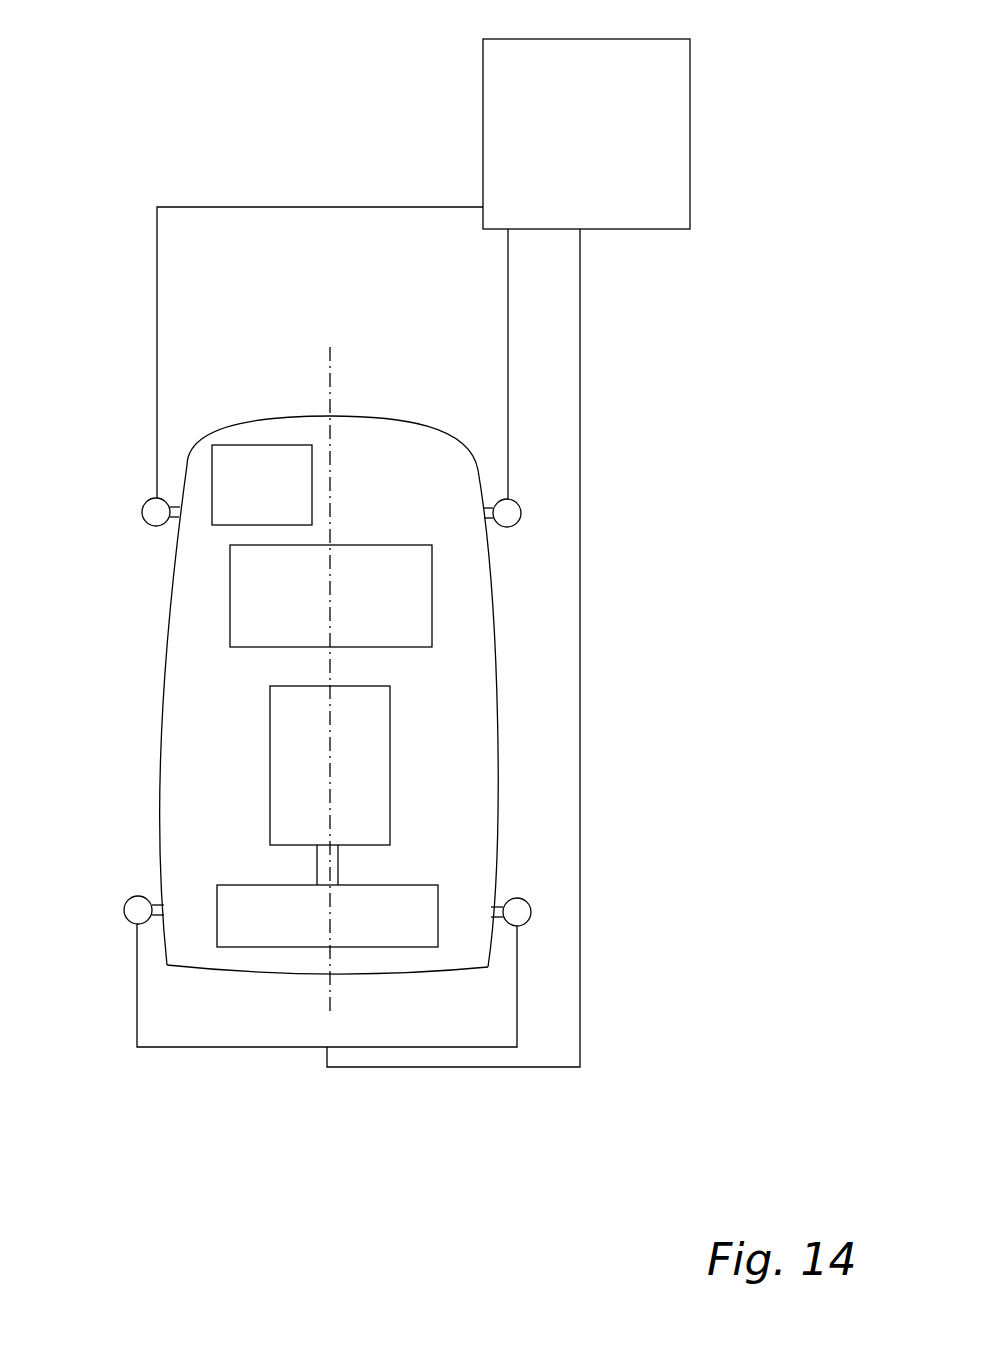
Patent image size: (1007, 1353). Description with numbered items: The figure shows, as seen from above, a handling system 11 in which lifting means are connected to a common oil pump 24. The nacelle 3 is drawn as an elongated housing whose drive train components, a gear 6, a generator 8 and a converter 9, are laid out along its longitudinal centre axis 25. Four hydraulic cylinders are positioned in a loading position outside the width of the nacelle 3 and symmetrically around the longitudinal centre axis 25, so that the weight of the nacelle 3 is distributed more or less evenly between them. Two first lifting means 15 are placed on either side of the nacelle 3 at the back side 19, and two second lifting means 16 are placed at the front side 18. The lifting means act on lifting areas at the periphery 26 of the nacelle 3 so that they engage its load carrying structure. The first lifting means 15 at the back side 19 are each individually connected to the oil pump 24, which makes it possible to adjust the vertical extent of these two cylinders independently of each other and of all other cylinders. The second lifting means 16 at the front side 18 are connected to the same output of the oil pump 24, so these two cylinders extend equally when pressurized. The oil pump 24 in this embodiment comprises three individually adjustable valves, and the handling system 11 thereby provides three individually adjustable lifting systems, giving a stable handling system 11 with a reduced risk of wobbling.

The handling system 11 is at (152, 119).
The oil pump 24 is at (656, 160).
The longitudinal centre axis 25 is at (330, 395).
The back side 19 is at (398, 418).
The nacelle 3 is at (183, 718).
The periphery 26 is at (500, 710).
The front side 18 is at (390, 972).
The first lifting means 15 is at (505, 515).
The second lifting means 16 is at (517, 913).
The converter 9 is at (405, 607).
The generator 8 is at (287, 777).
The gear 6 is at (270, 922).